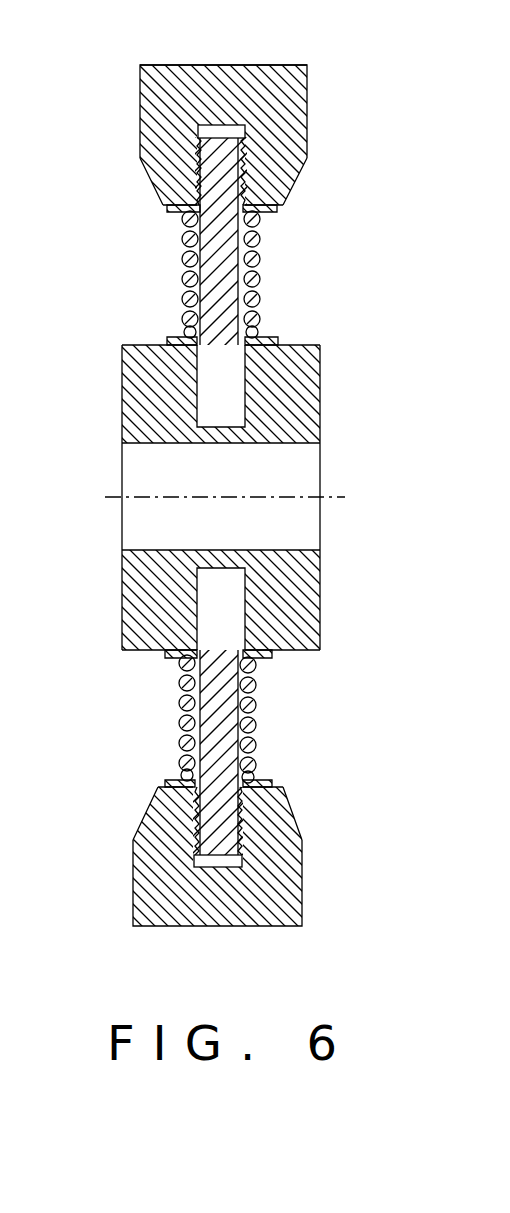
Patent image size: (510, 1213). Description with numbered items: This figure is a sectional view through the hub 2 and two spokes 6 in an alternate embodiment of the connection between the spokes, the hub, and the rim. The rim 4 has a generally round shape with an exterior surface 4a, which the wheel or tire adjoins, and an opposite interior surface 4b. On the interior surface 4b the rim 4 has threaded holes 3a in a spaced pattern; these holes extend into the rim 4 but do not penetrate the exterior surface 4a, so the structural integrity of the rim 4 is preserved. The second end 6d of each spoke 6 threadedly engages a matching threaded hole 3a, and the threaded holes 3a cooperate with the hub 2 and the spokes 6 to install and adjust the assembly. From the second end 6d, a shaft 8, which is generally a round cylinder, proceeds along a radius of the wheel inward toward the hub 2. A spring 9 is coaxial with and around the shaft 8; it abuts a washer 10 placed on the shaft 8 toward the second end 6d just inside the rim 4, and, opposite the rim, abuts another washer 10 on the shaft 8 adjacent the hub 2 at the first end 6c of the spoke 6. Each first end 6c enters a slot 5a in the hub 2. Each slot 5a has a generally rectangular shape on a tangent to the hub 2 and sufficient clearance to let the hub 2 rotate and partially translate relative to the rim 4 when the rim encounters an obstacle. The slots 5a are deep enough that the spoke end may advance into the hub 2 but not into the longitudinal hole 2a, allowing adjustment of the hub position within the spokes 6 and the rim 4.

The hub 2 is at (320, 382).
The longitudinal hole 2a is at (300, 478).
The threaded holes 3a is at (255, 183).
The rim 4 is at (227, 80).
The exterior surface 4a is at (210, 65).
The interior surface 4b is at (250, 182).
The slot 5a is at (230, 428).
The spoke 6 is at (210, 497).
The first end 6c is at (197, 378).
The second end 6d is at (190, 240).
The shaft 8 is at (235, 268).
The spring 9 is at (258, 279).
The washer 10 is at (180, 208).